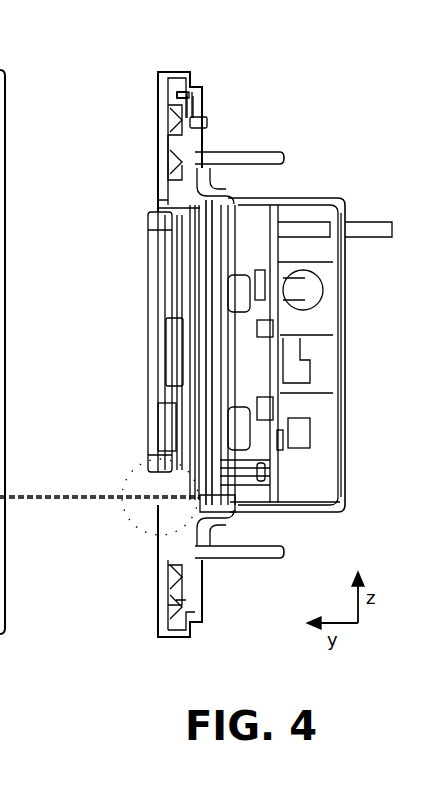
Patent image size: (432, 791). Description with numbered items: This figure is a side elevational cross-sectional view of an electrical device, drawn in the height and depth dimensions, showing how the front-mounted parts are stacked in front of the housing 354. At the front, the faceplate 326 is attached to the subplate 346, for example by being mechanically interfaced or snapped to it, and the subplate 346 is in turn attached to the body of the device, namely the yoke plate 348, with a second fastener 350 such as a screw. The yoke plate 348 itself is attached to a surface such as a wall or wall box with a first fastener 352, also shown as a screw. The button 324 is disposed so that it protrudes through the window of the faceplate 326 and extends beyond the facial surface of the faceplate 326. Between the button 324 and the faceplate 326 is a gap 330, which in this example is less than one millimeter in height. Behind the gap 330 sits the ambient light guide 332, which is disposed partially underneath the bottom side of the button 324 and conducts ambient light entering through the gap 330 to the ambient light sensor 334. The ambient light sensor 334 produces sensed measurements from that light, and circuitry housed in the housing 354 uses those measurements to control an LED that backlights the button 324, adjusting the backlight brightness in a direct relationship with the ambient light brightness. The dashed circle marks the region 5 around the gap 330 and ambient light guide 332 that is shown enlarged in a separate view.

The region 5 is at (140, 537).
The button 324 is at (148, 364).
The faceplate 326 is at (158, 140).
The gap 330 is at (100, 497).
The ambient light guide 332 is at (220, 512).
The ambient light sensor 334 is at (270, 513).
The subplate 346 is at (190, 98).
The yoke plate 348 is at (196, 108).
The second fastener 350 is at (207, 123).
The first fastener 352 is at (284, 160).
The housing 354 is at (345, 430).